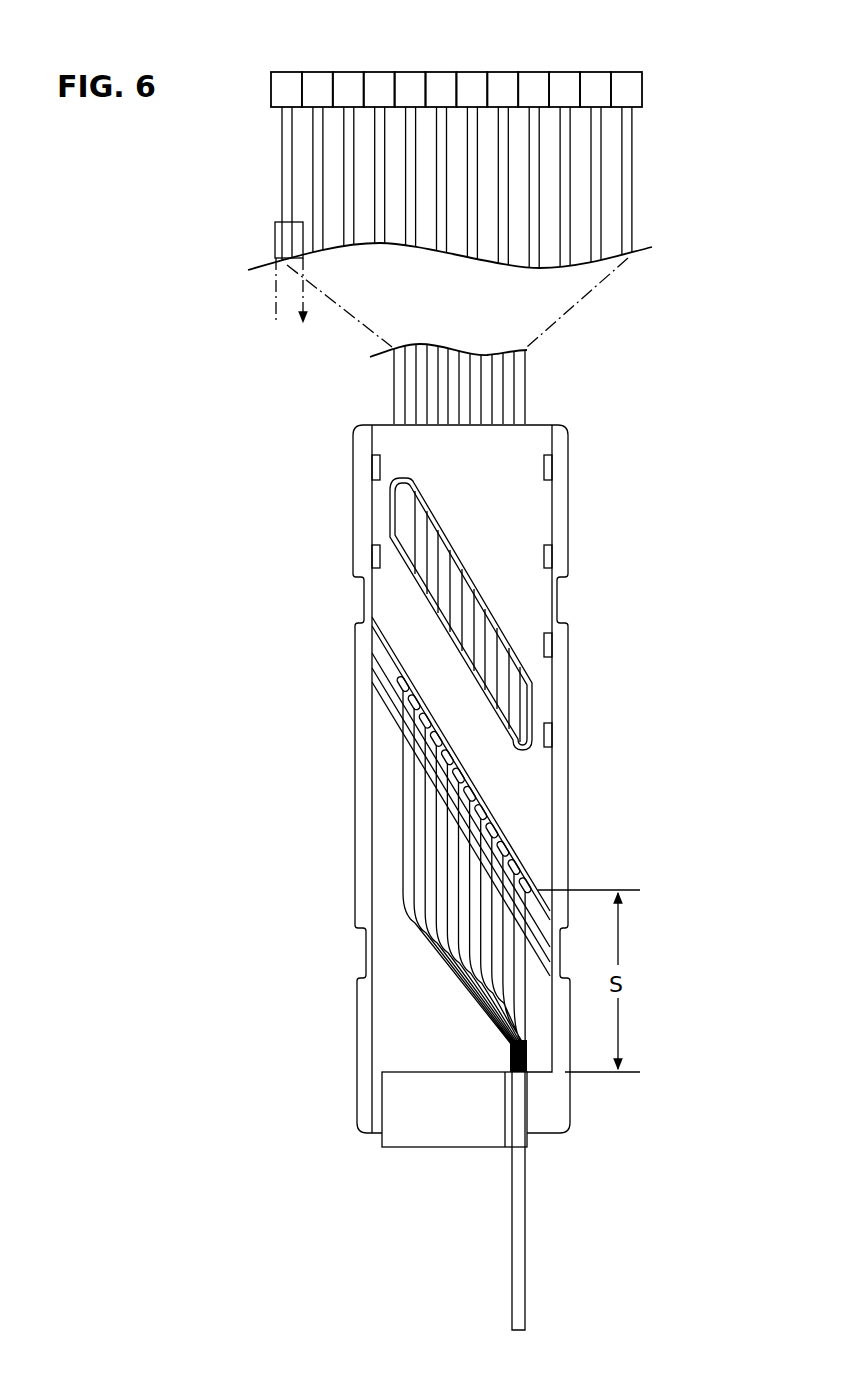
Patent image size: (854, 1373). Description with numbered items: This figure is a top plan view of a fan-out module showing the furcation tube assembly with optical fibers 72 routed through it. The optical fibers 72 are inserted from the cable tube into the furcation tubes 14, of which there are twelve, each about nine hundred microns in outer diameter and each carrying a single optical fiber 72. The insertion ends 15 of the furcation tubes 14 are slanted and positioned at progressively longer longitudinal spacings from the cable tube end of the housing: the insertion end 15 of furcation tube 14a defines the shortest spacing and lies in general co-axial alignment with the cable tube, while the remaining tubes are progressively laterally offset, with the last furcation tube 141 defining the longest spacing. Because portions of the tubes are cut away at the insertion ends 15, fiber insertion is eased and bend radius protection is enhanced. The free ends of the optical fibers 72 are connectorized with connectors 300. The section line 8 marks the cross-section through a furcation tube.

The connectors 300 is at (491, 66).
The furcation tubes 14 is at (643, 178).
The section line 8- 8 is at (293, 295).
The furcation tube 141 is at (400, 690).
The insertion ends 15 is at (490, 808).
The furcation tube 14a is at (540, 887).
The optical fibers 72 is at (399, 866).